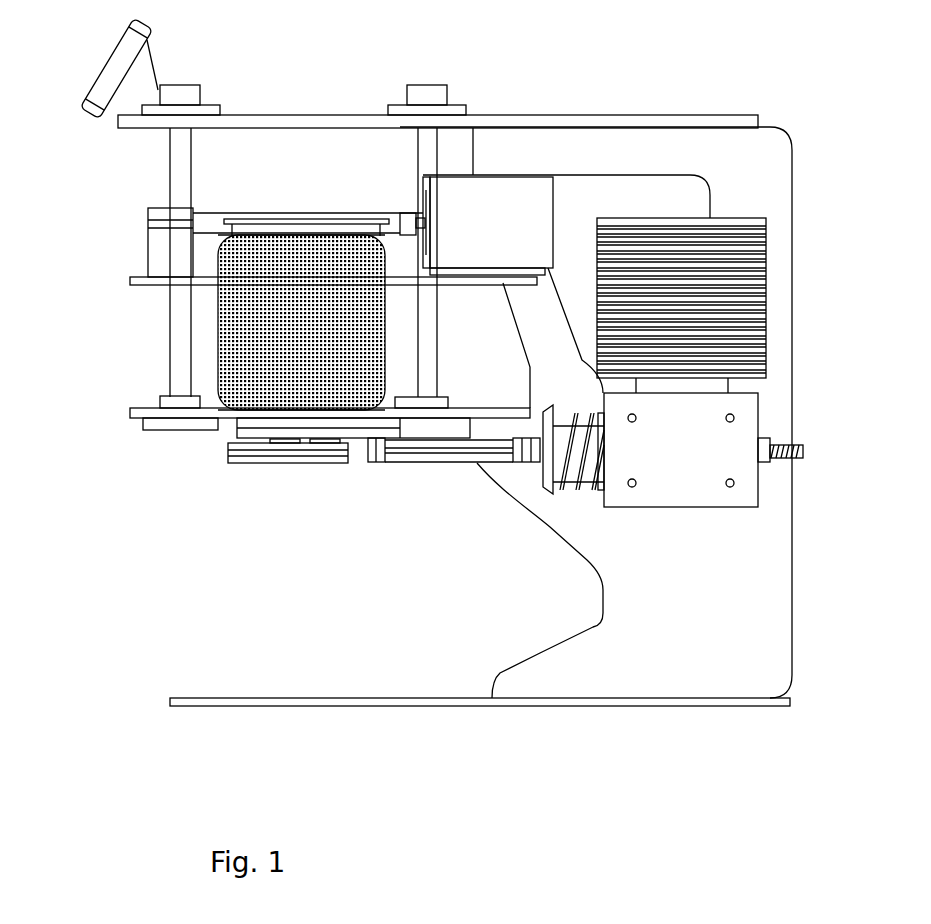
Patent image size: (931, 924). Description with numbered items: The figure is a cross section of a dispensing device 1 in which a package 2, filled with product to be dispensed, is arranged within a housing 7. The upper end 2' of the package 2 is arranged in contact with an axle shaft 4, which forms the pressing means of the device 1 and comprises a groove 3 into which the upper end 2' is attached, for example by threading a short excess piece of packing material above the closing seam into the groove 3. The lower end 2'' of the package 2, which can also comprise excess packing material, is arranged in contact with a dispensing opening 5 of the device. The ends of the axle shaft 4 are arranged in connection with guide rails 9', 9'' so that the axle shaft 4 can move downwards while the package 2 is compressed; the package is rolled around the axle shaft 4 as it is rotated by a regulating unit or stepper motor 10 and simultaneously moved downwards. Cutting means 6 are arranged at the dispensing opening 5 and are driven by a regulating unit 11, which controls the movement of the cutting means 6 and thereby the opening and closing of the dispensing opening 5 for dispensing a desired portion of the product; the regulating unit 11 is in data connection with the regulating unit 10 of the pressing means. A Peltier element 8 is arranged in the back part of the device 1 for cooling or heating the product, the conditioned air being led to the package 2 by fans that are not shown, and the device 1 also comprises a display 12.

The device 1 is at (618, 97).
The package 2 is at (242, 322).
The upper end of the package 2' is at (233, 207).
The lower end of the package 2'' is at (236, 446).
The groove 3 is at (318, 222).
The axle shaft 4 is at (205, 223).
The dispensing opening 5 is at (287, 467).
The cutting means 6 is at (370, 448).
The housing 7 is at (750, 650).
The Peltier element 8 is at (747, 283).
The guide rail 9' is at (120, 268).
The guide rail 9'' is at (443, 233).
The regulating unit/stepper motor 10 is at (512, 207).
The regulating unit 11 is at (687, 490).
The display 12 is at (110, 68).